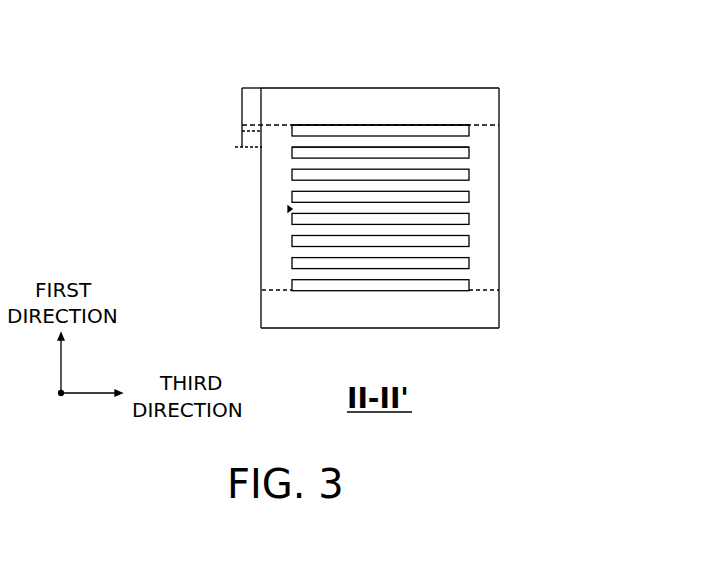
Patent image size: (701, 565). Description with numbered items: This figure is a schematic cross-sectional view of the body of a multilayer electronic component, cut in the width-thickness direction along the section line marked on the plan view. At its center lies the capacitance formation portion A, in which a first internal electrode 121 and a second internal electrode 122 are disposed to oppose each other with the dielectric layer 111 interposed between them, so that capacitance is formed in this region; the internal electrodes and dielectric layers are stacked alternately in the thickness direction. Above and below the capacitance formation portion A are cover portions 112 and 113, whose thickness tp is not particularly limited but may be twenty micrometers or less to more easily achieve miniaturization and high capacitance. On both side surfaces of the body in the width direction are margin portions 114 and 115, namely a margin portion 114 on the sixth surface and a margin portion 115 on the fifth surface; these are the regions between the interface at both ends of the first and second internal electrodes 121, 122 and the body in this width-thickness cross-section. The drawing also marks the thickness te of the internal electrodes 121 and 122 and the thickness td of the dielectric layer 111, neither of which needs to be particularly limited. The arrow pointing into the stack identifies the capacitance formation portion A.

The cover portion 112 is at (386, 105).
The cover portion 113 is at (492, 308).
The margin portion 114 is at (273, 246).
The margin portion 115 is at (492, 233).
The dielectric layer 111 is at (470, 137).
The first internal electrode 121 is at (470, 125).
The second internal electrode 122 is at (470, 148).
The capacitance formation portion A is at (289, 209).
The thickness of the cover portions tp is at (359, 117).
The thickness of the internal electrodes te is at (242, 131).
The thickness of the dielectric layer td is at (242, 144).